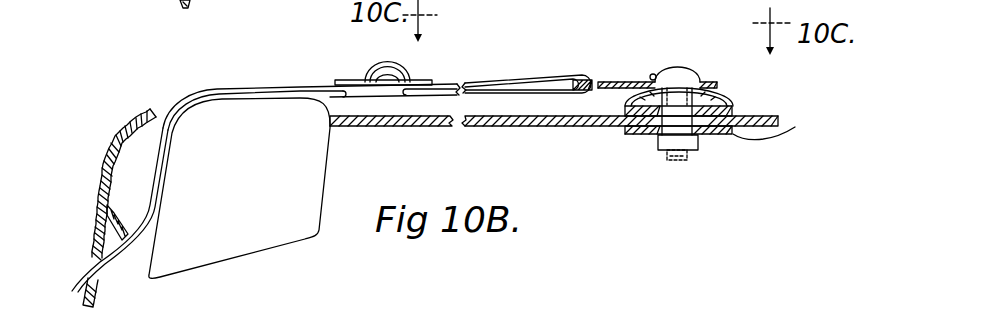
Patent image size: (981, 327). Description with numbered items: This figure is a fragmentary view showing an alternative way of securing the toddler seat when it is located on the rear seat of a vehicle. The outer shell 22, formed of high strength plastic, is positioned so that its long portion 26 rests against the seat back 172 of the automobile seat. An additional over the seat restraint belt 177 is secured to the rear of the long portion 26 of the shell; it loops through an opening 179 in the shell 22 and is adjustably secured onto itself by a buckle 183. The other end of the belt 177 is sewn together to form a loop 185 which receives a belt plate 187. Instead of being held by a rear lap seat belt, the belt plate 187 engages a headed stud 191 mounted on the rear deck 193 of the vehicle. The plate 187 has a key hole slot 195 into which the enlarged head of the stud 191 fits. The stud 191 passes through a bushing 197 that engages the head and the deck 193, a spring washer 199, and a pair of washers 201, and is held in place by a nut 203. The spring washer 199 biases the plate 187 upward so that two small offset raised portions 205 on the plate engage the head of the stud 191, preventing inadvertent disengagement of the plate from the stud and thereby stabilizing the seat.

The outer shell 22 is at (120, 117).
The long portion 26 is at (97, 297).
The opening 179 is at (88, 258).
The seat back 172 is at (270, 203).
The over the seat restraint strap or belt 177 is at (313, 86).
The buckle 183 is at (428, 80).
The loop 185 is at (510, 78).
The belt plate 187 is at (613, 80).
The key hole slot 195 is at (642, 80).
The raised portions 205 is at (654, 72).
The headed stud 191 is at (687, 76).
The spring washer 199 is at (718, 99).
The washers 201 is at (737, 111).
The bushing 197 is at (637, 135).
The nut 203 is at (698, 148).
The rear deck 193 is at (507, 127).